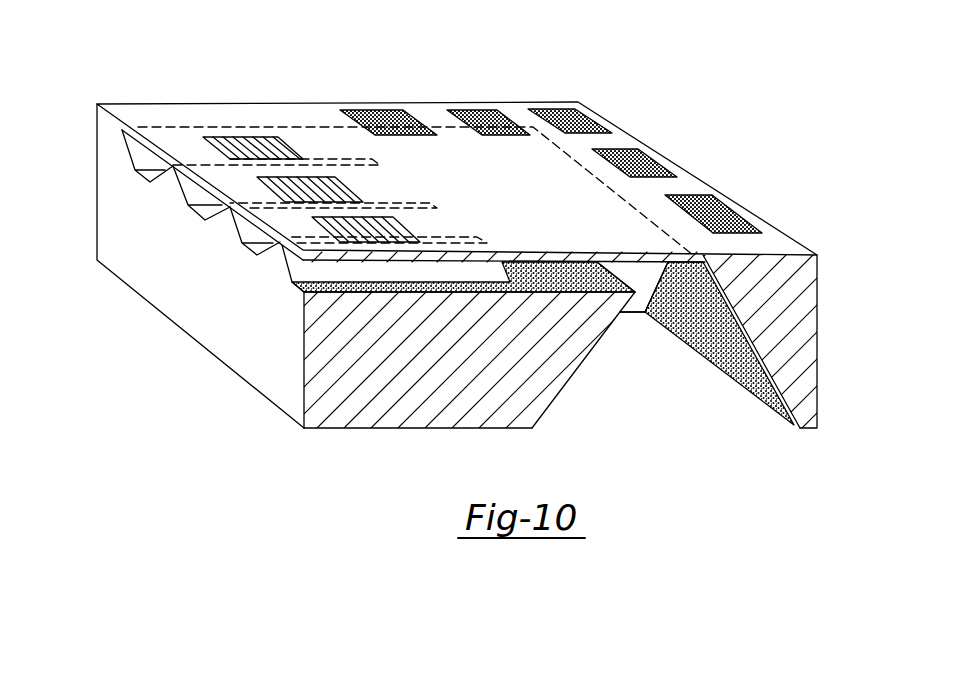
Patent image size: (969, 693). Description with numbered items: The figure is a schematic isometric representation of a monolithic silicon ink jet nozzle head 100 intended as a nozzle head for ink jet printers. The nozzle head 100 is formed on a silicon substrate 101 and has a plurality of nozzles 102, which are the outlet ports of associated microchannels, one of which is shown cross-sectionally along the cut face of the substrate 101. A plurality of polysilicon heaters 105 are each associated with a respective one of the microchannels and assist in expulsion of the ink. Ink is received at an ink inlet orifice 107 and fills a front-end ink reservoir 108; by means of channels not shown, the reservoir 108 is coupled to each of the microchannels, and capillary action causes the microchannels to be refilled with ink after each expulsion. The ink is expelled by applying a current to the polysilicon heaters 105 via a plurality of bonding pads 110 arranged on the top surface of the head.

The monolithic silicon ink jet nozzle head 100 is at (313, 512).
The silicon substrate 101 is at (267, 333).
The nozzles 102 is at (195, 193).
The polysilicon heaters 105 is at (245, 140).
The ink inlet orifice 107 is at (632, 330).
The front-end ink reservoir 108 is at (448, 178).
The bonding pads 110 is at (372, 112).